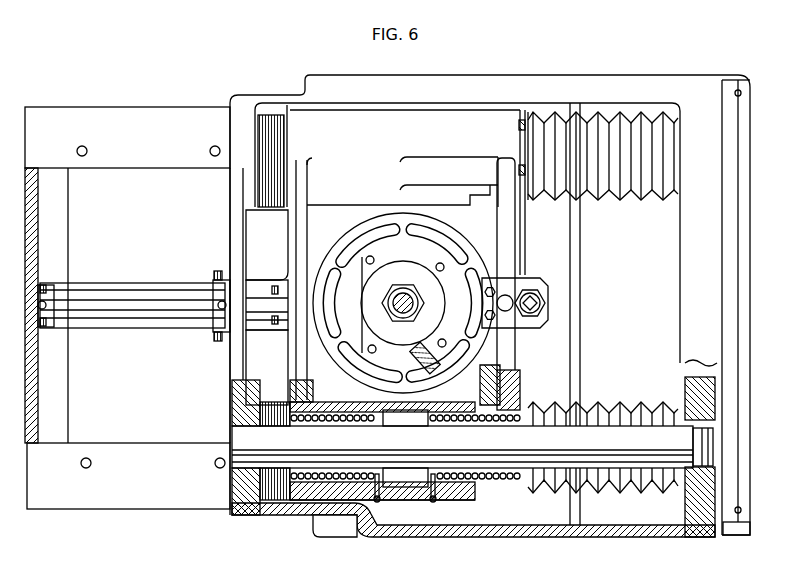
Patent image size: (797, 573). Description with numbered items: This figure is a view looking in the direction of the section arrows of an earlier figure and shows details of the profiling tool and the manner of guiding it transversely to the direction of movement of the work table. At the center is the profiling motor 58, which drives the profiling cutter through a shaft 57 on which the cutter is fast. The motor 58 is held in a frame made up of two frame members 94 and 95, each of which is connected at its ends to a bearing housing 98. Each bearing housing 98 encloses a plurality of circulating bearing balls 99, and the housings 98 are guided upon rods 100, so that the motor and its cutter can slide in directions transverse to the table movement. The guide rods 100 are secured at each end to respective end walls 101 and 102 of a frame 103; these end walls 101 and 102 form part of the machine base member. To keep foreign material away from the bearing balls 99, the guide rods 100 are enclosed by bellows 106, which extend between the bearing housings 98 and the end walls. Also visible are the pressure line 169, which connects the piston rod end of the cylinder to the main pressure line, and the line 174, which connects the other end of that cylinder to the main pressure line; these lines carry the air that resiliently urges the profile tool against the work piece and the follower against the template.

The shaft 57 is at (416, 305).
The profiling motor 58 is at (462, 228).
The frame member 94 is at (288, 246).
The frame member 95 is at (514, 253).
The bearing housing 98 is at (446, 149).
The circulating bearing balls 99 is at (303, 500).
The guide rod 100 is at (409, 458).
The end wall 101 is at (241, 490).
The end wall 102 is at (713, 487).
The frame 103 is at (499, 534).
The bellows 106 is at (258, 210).
The pressure line 169 is at (220, 310).
The line 174 is at (52, 303).